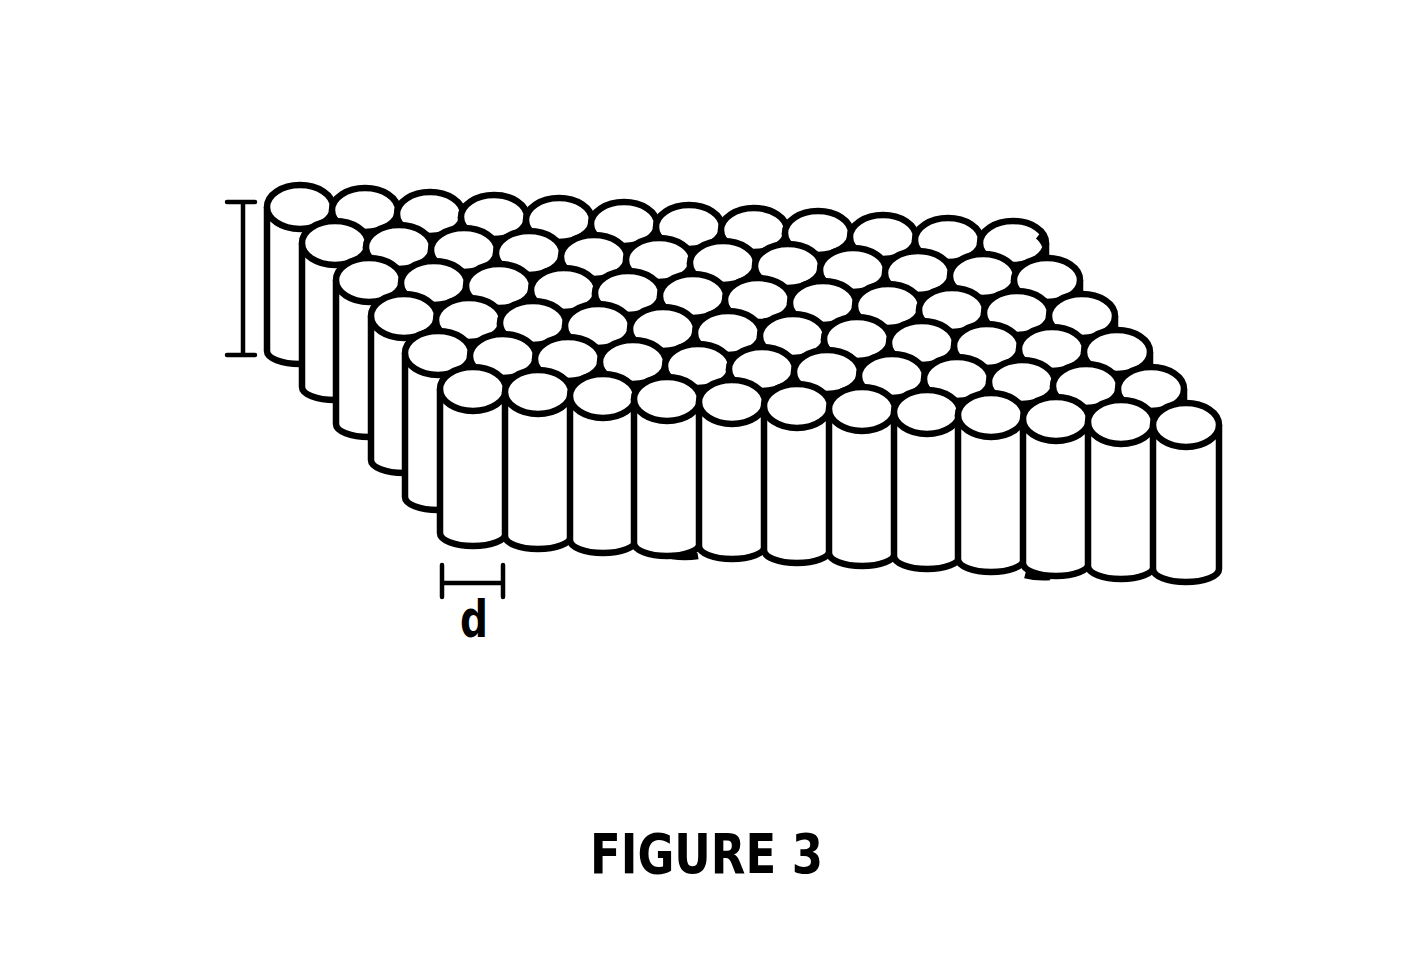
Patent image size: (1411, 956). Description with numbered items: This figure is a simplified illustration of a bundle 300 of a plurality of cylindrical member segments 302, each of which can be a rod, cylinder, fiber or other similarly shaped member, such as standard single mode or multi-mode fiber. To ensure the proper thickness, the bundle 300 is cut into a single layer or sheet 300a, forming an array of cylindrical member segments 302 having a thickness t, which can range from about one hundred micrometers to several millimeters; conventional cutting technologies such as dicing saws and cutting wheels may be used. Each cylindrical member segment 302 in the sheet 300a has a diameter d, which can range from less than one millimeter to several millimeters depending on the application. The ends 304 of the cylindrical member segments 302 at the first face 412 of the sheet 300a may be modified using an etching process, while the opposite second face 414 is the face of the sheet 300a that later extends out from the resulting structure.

The bundle 300 is at (827, 307).
The sheet 300a is at (215, 188).
The cylindrical member segment 302 is at (430, 197).
The ends 304 is at (823, 225).
The first face 412 is at (1038, 614).
The second face 414 is at (1070, 226).